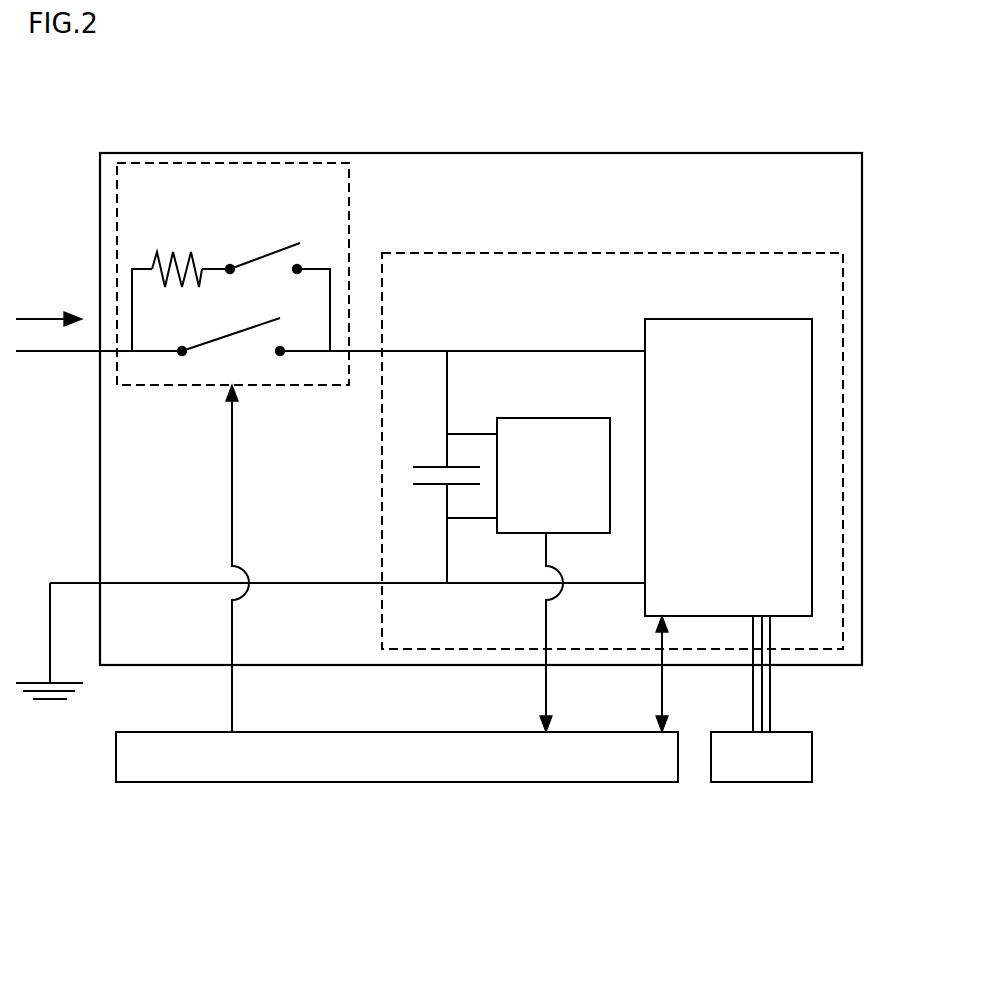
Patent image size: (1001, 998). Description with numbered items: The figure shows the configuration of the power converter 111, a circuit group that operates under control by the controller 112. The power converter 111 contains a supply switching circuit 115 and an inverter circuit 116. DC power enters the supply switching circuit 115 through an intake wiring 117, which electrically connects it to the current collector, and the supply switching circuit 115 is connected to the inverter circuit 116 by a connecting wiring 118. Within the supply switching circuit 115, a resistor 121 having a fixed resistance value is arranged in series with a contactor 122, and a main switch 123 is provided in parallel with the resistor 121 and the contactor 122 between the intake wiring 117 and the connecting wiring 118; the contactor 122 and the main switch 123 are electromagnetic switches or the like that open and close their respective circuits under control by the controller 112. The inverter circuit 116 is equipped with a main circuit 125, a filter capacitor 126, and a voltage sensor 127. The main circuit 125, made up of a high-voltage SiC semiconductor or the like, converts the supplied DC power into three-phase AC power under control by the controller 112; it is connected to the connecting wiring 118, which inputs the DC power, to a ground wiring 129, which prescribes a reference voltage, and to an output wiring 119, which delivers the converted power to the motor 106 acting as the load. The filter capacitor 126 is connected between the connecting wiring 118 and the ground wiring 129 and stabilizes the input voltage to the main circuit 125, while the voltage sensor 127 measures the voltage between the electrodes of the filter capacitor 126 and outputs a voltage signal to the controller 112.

The motor 106 is at (768, 784).
The power converter 111 is at (776, 153).
The controller 112 is at (400, 784).
The supply switching circuit 115 is at (350, 196).
The inverter circuit 116 is at (745, 249).
The intake wiring 117 is at (53, 354).
The connecting wiring 118 is at (363, 354).
The output wiring 119 is at (784, 697).
The resistor 121 is at (168, 258).
The contactor 122 is at (248, 263).
The main switch 123 is at (220, 338).
The main circuit 125 is at (678, 318).
The filter capacitor 126 is at (432, 465).
The voltage sensor 127 is at (560, 418).
The ground wiring 129 is at (58, 582).